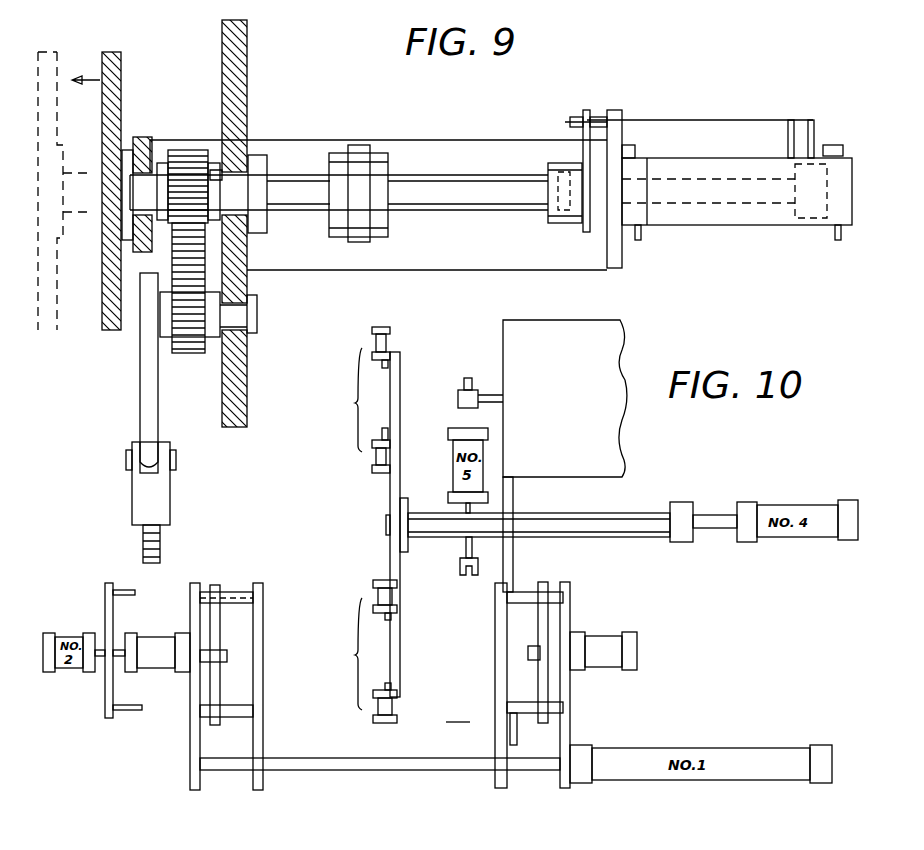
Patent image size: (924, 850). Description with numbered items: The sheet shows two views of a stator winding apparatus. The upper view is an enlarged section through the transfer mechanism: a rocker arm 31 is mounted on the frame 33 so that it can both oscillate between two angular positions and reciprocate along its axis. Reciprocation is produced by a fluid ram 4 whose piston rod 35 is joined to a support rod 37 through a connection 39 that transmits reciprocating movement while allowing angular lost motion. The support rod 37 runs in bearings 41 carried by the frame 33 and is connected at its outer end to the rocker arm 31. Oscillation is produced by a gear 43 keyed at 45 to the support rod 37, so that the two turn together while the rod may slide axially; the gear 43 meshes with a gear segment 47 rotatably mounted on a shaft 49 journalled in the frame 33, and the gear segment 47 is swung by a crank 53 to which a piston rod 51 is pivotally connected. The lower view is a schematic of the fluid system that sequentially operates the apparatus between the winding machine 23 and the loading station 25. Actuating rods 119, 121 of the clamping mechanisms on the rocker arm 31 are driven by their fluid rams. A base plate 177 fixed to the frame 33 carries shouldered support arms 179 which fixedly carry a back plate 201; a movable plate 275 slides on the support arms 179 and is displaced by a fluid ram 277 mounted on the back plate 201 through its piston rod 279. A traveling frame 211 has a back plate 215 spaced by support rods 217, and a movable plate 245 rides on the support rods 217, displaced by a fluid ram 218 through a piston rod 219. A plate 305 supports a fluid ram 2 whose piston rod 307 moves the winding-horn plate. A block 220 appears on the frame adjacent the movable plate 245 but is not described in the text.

In FIG. 9, the rocker arm 31 is at (122, 80).
In FIG. 10, the rocker arm 31 is at (401, 375).
In FIG. 9, the frame 33 is at (236, 42).
In FIG. 10, the frame 33 is at (514, 562).
In FIG. 9, the support rod 37 is at (452, 183).
In FIG. 9, the gear 43 is at (188, 160).
In FIG. 9, the key 45 is at (225, 170).
In FIG. 9, the bearings 41 is at (262, 168).
In FIG. 9, the connection 39 is at (562, 168).
In FIG. 9, the piston rod 35 is at (590, 200).
In FIG. 10, the piston rod 35 is at (714, 518).
In FIG. 9, the fluid ram 4 is at (712, 172).
In FIG. 9, the gear segment 47 is at (195, 270).
In FIG. 9, the shaft 49 is at (250, 316).
In FIG. 9, the crank 53 is at (150, 396).
In FIG. 9, the piston rod 51 is at (160, 548).
In FIG. 10, the piston rod 51 is at (466, 548).
In FIG. 10, the actuating rod 121 is at (376, 366).
In FIG. 10, the winding machine 23 is at (588, 340).
In FIG. 10, the base plate 177 is at (497, 672).
In FIG. 10, the movable plate 275 is at (546, 586).
In FIG. 10, the back plate 201 is at (566, 732).
In FIG. 10, the support arms 179 is at (525, 598).
In FIG. 10, the piston rod 279 is at (540, 652).
In FIG. 10, the fluid ram 277 is at (628, 642).
In FIG. 10, the loading station 25 is at (459, 711).
In FIG. 10, the piston rod 219 is at (420, 765).
In FIG. 10, the actuating rod 119 is at (388, 688).
In FIG. 10, the back plate 215 is at (195, 750).
In FIG. 10, the traveling frame 211 is at (262, 748).
In FIG. 10, the movable plate 245 is at (219, 620).
In FIG. 10, the support rods 217 is at (231, 592).
In FIG. 10, the block 220 is at (226, 656).
In FIG. 10, the plate 305 is at (108, 698).
In FIG. 10, the piston rod 307 is at (106, 628).
In FIG. 10, the fluid ram 218 is at (166, 672).
In FIG. 10, the fluid ram 2 is at (196, 823).